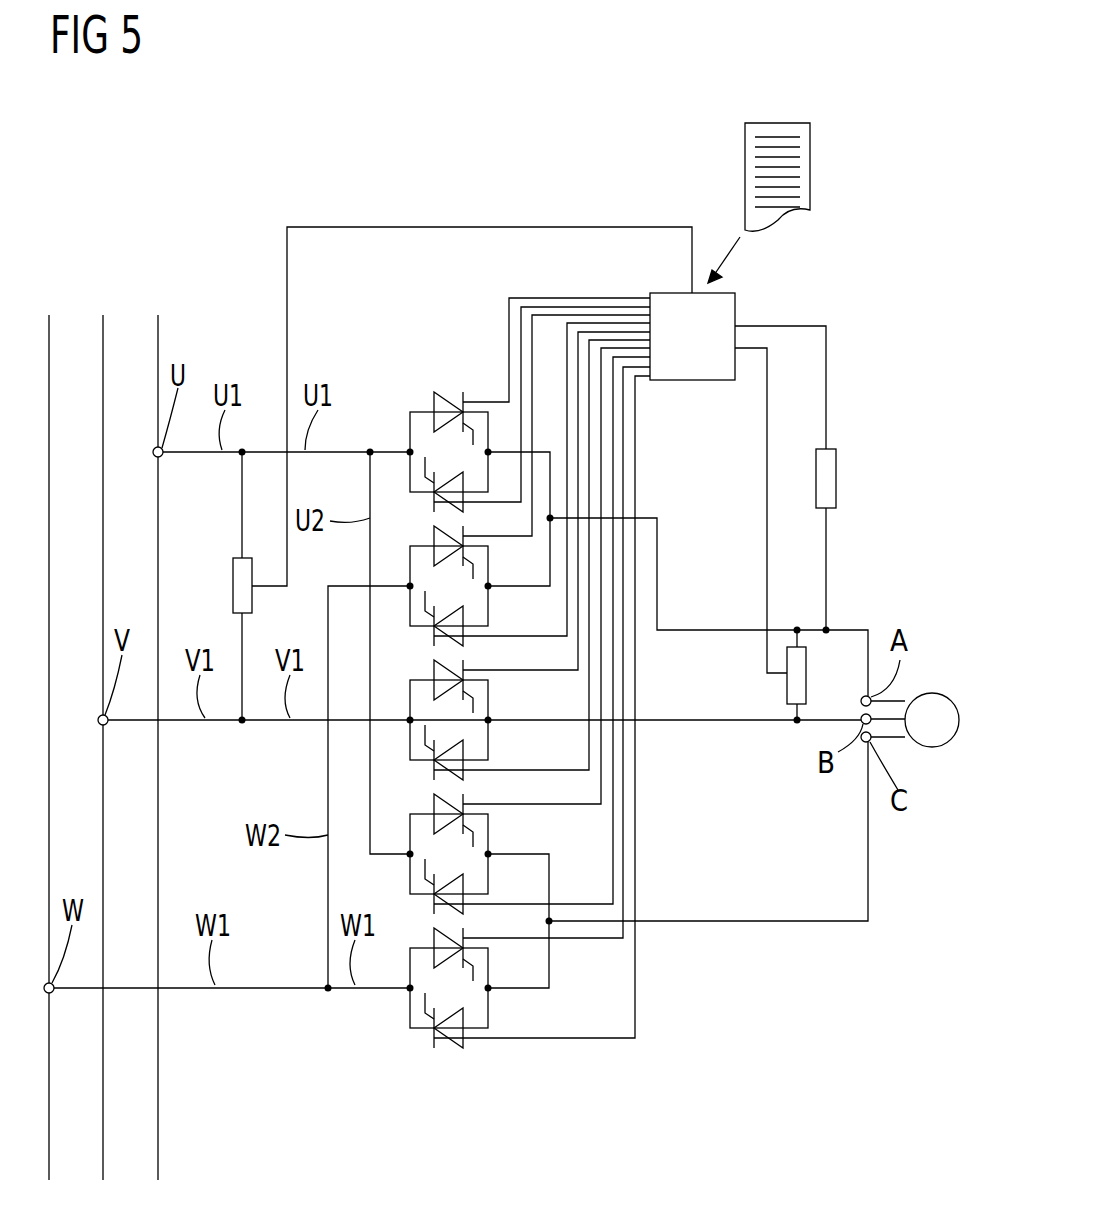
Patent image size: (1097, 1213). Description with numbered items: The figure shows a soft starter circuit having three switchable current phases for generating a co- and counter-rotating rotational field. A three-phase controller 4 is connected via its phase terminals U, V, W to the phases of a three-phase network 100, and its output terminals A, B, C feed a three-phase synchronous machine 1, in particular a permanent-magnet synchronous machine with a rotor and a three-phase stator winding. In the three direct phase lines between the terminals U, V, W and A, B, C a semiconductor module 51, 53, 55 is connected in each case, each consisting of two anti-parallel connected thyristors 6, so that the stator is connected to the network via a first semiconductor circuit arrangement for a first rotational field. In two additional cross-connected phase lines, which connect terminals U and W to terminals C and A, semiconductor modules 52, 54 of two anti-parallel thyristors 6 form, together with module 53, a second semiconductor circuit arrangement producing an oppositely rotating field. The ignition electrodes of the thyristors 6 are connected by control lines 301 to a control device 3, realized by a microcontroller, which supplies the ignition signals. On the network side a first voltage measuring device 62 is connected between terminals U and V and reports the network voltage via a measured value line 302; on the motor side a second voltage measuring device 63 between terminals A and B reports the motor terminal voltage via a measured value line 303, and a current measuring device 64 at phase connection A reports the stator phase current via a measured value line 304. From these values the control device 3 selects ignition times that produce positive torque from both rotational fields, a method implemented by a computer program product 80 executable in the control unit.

The three-phase synchronous machine 1 is at (930, 695).
The control device 3 is at (735, 312).
The three-phase controller 4 is at (450, 114).
The thyristors 6 is at (434, 402).
The semiconductor module 51 is at (430, 452).
The semiconductor module 52 is at (468, 588).
The semiconductor module 53 is at (468, 722).
The semiconductor module 54 is at (468, 856).
The semiconductor module 55 is at (468, 990).
The first voltage measuring device 62 is at (233, 585).
The second voltage measuring device 63 is at (787, 690).
The current measuring device 64 is at (836, 481).
The computer program product 80 is at (775, 122).
The three-phase network 100 is at (161, 305).
The control lines 301 is at (532, 357).
The measured value line 302 is at (500, 227).
The measured value line 303 is at (767, 557).
The measured value line 304 is at (826, 388).